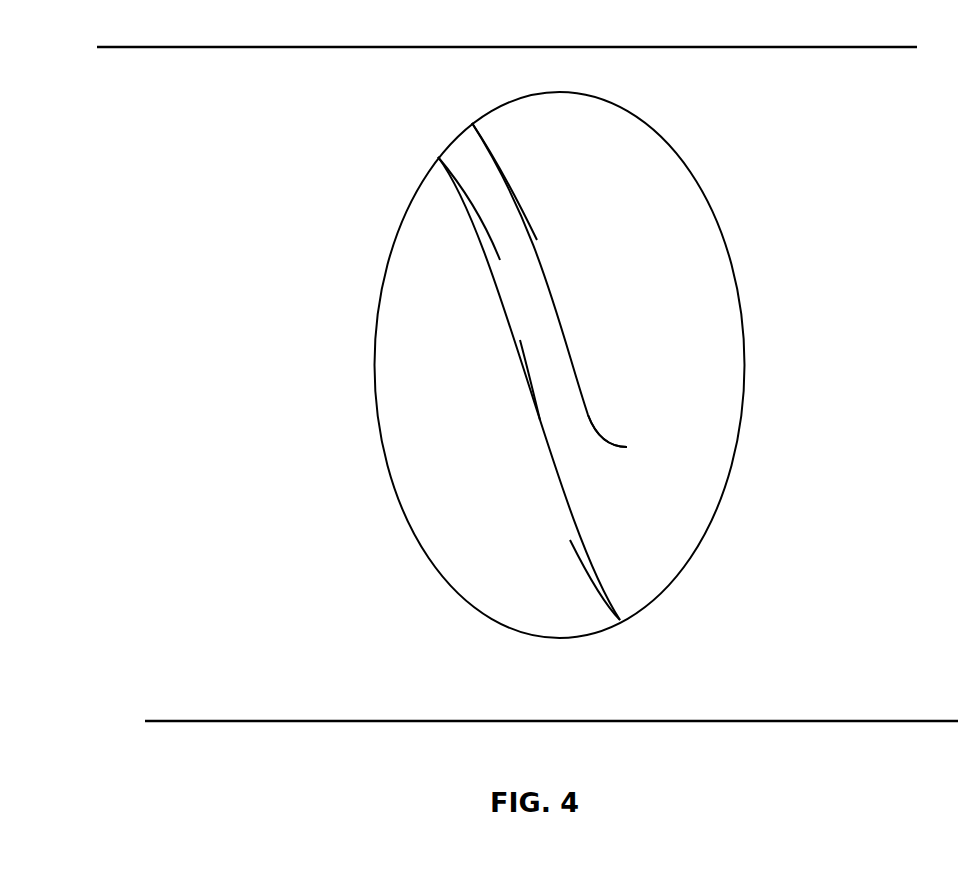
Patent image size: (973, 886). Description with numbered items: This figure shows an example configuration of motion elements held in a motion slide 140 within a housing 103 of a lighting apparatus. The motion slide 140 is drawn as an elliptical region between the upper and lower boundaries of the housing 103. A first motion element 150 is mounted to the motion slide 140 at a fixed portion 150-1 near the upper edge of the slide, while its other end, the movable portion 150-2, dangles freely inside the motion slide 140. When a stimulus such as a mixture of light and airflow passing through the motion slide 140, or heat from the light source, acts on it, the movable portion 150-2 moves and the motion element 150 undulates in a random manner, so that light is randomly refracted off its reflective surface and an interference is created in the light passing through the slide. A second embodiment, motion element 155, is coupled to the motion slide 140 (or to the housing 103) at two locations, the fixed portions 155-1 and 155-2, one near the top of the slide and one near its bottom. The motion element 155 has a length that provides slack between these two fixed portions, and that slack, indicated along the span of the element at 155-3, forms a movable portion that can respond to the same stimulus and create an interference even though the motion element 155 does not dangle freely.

The housing 103 is at (608, 38).
The motion slide 140 is at (451, 606).
The motion element 150 is at (557, 239).
The fixed portion 150-1 is at (470, 121).
The movable portion 150-2 is at (596, 440).
The motion element 155 is at (518, 437).
The fixed portion 155-1 is at (436, 155).
The fixed portion 155-2 is at (620, 627).
The middle portion of second curved line 155-3 is at (520, 357).